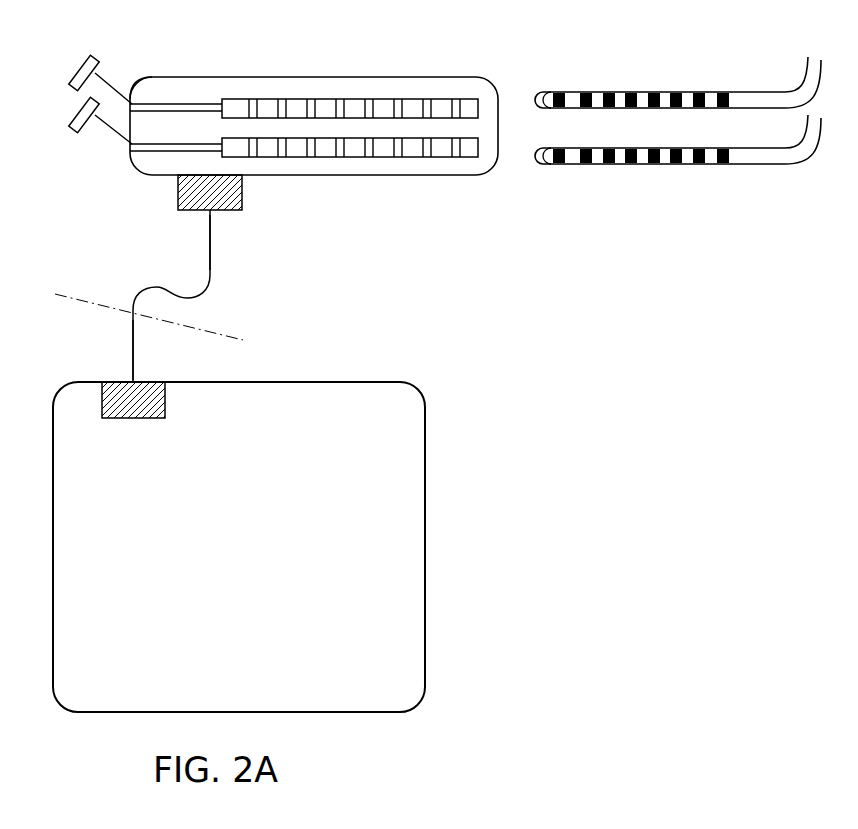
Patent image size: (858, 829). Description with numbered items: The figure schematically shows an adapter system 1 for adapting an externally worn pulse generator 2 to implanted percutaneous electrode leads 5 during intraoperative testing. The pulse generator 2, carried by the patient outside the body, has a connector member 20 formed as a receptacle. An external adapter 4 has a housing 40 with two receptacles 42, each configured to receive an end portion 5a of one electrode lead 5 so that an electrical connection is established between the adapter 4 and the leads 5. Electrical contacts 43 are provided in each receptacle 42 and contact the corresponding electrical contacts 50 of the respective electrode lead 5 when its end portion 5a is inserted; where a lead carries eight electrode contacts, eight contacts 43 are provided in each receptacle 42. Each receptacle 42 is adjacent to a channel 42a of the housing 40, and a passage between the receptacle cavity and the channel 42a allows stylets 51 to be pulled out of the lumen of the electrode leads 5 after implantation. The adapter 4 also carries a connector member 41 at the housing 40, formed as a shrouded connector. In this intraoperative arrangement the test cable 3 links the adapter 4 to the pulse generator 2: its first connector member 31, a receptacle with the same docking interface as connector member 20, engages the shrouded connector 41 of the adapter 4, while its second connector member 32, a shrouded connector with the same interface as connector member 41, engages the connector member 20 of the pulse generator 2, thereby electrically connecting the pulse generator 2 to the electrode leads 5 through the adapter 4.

The adapter system 1 is at (510, 440).
The pulse generator 2 is at (233, 590).
The test cable 3 is at (218, 267).
The external adapter 4 is at (130, 165).
The electrode lead 5 is at (766, 92).
The end portion 5a is at (575, 98).
The connector member 20 is at (133, 419).
The first connector member 31 is at (209, 243).
The second connector member 32 is at (132, 345).
The housing 40 is at (166, 90).
The connector member 41 is at (178, 194).
The receptacle 42 is at (357, 100).
The channel 42a is at (201, 100).
The electrical contacts 43 is at (342, 100).
The electrical contacts 50 is at (697, 93).
The stylet 51 is at (76, 70).